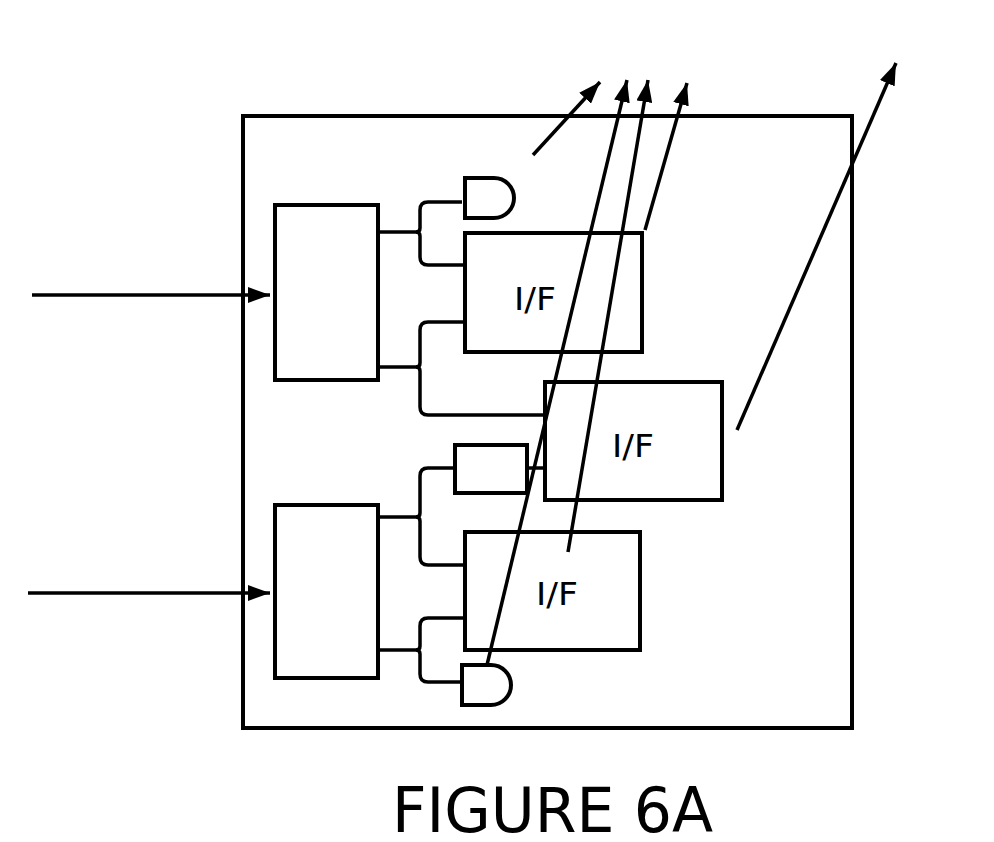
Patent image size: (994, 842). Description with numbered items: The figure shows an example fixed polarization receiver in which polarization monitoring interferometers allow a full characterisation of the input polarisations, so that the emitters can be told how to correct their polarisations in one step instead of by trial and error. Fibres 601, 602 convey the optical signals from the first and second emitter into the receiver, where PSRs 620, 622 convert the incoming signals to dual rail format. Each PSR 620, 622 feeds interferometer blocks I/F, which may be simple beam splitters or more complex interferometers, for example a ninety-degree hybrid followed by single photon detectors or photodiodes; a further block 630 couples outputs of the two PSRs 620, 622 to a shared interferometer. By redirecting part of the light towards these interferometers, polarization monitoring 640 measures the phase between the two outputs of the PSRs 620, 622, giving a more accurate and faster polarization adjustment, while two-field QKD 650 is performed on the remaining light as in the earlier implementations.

The fibre 601 is at (151, 262).
The fibre 602 is at (149, 562).
The PSR 620 is at (410, 308).
The PSR 622 is at (370, 575).
The combiner block 630 is at (500, 469).
The polarization monitoring 640 is at (587, 345).
The two-field QKD 650 is at (829, 225).